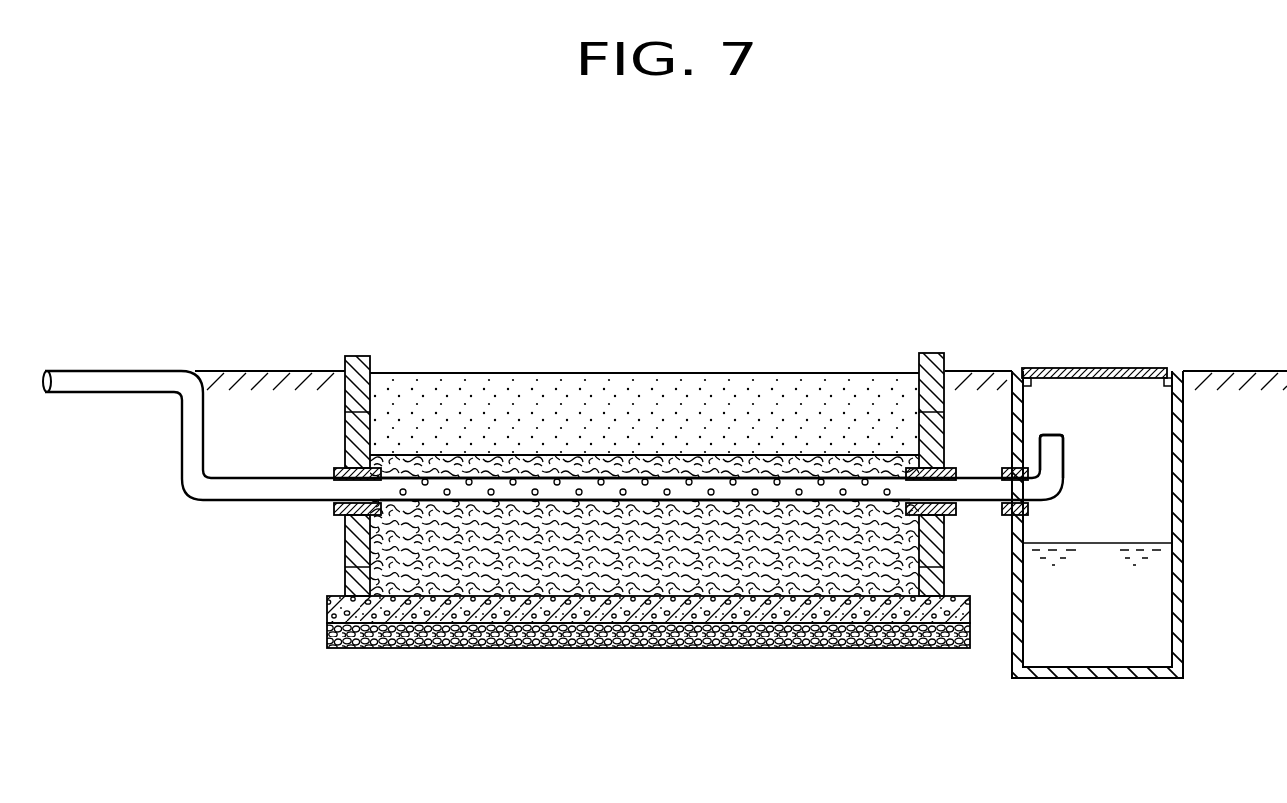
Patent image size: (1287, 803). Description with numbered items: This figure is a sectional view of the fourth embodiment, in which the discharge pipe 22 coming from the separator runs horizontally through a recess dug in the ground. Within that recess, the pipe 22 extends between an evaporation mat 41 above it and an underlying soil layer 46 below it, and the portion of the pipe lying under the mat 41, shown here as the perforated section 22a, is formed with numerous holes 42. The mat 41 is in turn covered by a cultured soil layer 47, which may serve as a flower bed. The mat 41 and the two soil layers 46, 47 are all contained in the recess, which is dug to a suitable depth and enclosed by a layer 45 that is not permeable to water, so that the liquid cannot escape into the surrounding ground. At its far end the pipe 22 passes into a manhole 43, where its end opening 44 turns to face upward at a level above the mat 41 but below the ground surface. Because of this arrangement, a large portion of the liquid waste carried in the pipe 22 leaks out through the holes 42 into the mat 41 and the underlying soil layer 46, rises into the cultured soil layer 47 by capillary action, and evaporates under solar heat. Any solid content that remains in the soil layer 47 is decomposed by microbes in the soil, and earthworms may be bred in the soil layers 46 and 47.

The discharge pipe 22 is at (132, 375).
The perforated pipe section 22a is at (417, 487).
The holes 42 is at (533, 489).
The evaporation mat 41 is at (593, 455).
The underlying soil layer 46 is at (660, 520).
The cultured soil layer 47 is at (740, 400).
The layer not permeable to water 45 is at (338, 597).
The end opening 44 is at (1050, 443).
The manhole 43 is at (1111, 402).